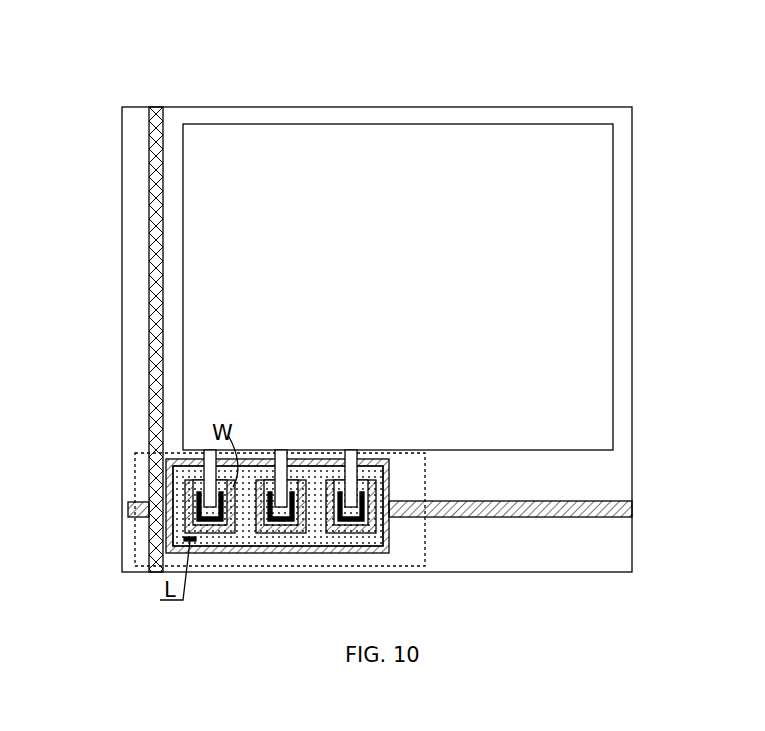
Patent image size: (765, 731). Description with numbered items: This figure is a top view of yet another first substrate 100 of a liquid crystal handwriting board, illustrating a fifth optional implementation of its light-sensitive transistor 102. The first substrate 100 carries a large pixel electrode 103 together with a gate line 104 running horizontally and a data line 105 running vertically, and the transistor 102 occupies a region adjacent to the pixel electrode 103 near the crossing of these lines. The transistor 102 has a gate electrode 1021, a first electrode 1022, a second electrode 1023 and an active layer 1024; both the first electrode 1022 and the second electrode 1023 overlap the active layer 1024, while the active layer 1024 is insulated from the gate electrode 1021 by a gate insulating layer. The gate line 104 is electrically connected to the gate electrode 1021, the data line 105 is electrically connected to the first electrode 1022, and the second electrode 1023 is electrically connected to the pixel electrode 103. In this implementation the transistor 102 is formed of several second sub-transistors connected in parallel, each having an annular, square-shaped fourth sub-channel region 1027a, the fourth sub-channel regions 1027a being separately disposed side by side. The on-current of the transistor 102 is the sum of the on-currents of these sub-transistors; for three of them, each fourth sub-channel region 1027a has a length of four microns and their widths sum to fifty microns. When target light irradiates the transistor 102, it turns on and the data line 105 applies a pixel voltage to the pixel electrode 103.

The first substrate 100 is at (122, 40).
The transistor 102 is at (323, 527).
The pixel electrode 103 is at (606, 178).
The gate line 104 is at (630, 510).
The data line 105 is at (158, 100).
The gate electrode 1021 is at (238, 558).
The first electrode 1022 is at (303, 548).
The second electrode 1023 is at (362, 518).
The active layer 1024 is at (369, 533).
The fourth sub-channel region 1027a is at (198, 494).